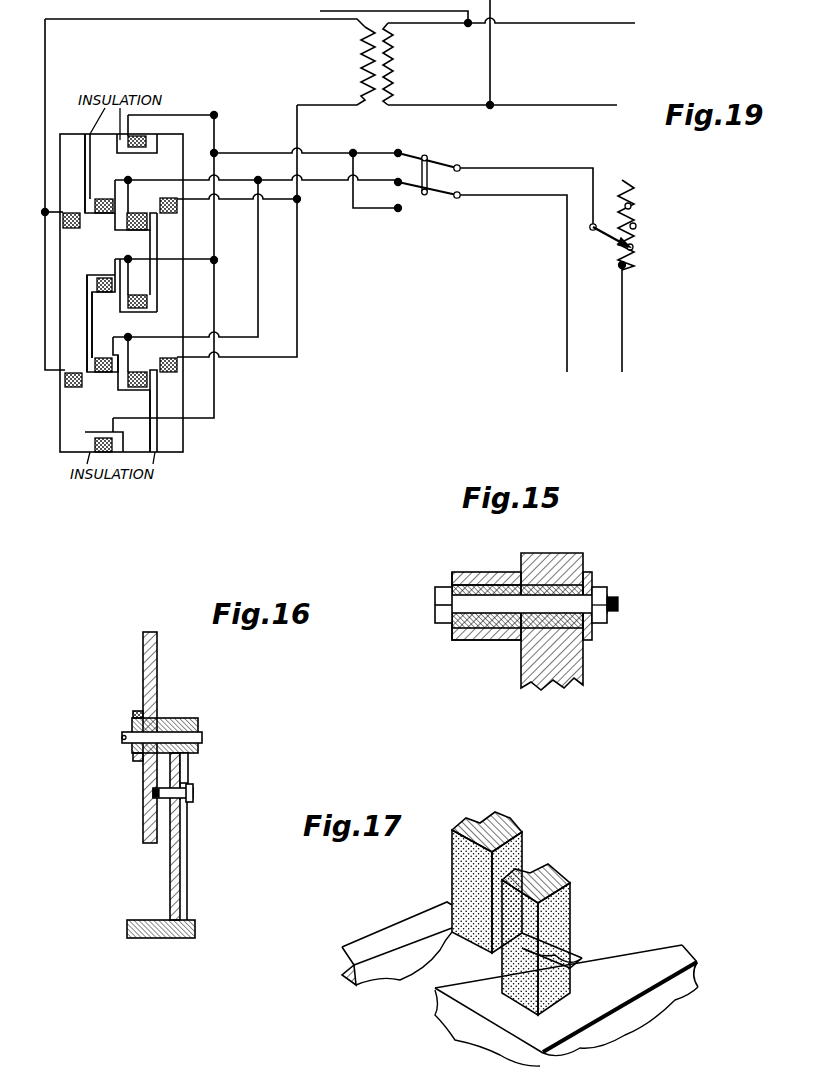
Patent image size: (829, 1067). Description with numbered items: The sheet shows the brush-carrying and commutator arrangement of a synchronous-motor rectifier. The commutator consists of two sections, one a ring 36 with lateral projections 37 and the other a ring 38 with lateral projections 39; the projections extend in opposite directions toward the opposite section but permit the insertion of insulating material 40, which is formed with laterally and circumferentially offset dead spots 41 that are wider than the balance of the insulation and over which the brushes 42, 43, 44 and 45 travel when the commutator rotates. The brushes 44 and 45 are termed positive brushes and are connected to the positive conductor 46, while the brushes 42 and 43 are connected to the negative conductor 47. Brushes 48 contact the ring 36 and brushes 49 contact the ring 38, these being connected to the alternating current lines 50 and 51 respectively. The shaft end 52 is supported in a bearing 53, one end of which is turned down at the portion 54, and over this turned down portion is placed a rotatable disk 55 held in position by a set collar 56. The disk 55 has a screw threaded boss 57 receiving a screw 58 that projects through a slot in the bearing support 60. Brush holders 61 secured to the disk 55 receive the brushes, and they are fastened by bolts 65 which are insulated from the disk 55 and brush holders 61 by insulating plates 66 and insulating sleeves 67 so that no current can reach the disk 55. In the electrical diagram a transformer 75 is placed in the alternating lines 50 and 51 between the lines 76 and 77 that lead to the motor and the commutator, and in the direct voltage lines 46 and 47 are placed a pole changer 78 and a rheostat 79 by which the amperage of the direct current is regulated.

In FIG. 19, the ring 36 is at (68, 277).
In FIG. 19, the lateral projections 37 is at (120, 258).
In FIG. 19, the ring 38 is at (168, 298).
In FIG. 19, the lateral projections 39 is at (103, 178).
In FIG. 19, the insulating material 40 is at (85, 157).
In FIG. 17, the insulating material 40 is at (372, 940).
In FIG. 19, the dead spots 41 is at (101, 194).
In FIG. 17, the dead spots 41 is at (578, 940).
In FIG. 19, the brush 42 is at (103, 215).
In FIG. 17, the brush 42 is at (466, 818).
In FIG. 19, the brush 43 is at (140, 213).
In FIG. 17, the brush 43 is at (555, 880).
In FIG. 19, the brush 44 is at (104, 293).
In FIG. 19, the brush 45 is at (140, 294).
In FIG. 19, the positive conductor 46 is at (648, 327).
In FIG. 19, the negative conductor 47 is at (160, 179).
In FIG. 19, the brushes 48 is at (73, 228).
In FIG. 19, the brushes 49 is at (167, 196).
In FIG. 19, the alternating current line 50 is at (203, 22).
In FIG. 19, the alternating current line 51 is at (552, 104).
In FIG. 16, the shaft end 52 is at (203, 735).
In FIG. 16, the bearing 53 is at (198, 720).
In FIG. 16, the turned down portion 54 is at (135, 749).
In FIG. 15, the rotatable disk 55 is at (585, 673).
In FIG. 16, the rotatable disk 55 is at (158, 650).
In FIG. 16, the set collar 56 is at (133, 712).
In FIG. 16, the screw threaded boss 57 is at (171, 784).
In FIG. 16, the screw 58 is at (188, 783).
In FIG. 16, the bearing support 60 is at (186, 850).
In FIG. 15, the brush holders 61 is at (495, 641).
In FIG. 15, the bolts 65 is at (460, 600).
In FIG. 15, the insulating plates 66 is at (516, 575).
In FIG. 15, the insulating sleeves 67 is at (553, 580).
In FIG. 19, the transformer 75 is at (392, 65).
In FIG. 19, the line 76 is at (205, 13).
In FIG. 19, the line 77 is at (330, 12).
In FIG. 19, the pole changer 78 is at (447, 160).
In FIG. 19, the rheostat 79 is at (640, 254).